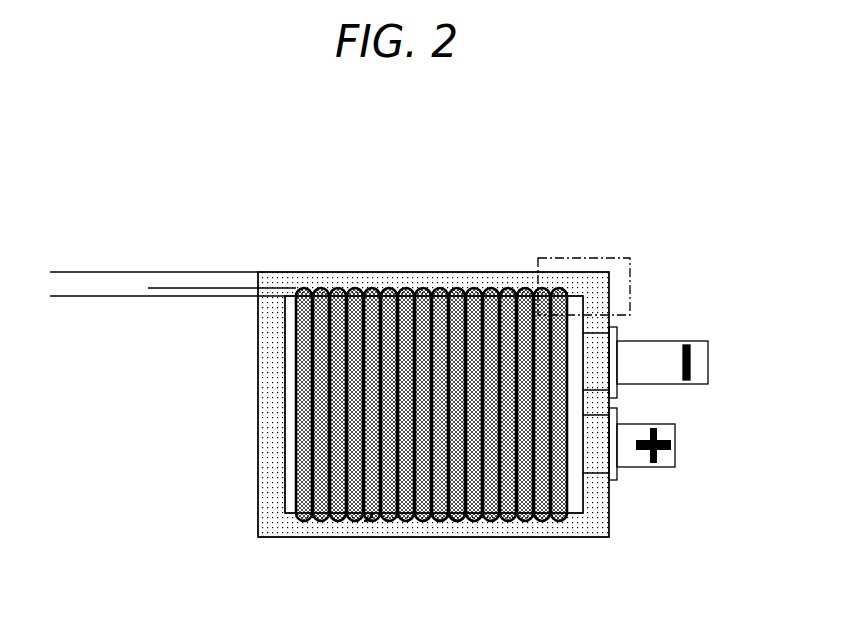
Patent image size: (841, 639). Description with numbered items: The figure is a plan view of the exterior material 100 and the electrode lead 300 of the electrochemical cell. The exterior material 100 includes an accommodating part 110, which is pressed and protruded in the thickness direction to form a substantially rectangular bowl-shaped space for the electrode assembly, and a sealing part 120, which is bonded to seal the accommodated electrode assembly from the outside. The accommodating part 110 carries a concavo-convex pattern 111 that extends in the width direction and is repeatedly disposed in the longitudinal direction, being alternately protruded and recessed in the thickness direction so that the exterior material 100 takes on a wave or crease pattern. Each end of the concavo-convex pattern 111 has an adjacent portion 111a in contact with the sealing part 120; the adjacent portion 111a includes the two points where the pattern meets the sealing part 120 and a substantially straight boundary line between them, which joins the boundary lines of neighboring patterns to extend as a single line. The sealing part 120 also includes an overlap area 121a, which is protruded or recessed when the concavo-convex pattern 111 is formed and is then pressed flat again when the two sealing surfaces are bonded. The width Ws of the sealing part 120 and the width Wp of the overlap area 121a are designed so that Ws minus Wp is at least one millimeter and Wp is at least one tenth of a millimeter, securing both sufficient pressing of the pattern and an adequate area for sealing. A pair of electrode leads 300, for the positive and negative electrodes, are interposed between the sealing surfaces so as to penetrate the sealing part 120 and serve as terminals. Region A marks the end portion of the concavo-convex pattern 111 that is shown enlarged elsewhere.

The exterior material 100 is at (460, 158).
The accommodating part 110 is at (293, 373).
The concavo-convex pattern 111 is at (548, 507).
The adjacent portion 111a is at (369, 521).
The sealing part 120 is at (272, 418).
The overlap area 121a is at (450, 520).
The electrode lead 300 is at (679, 326).
The enlarged region A is at (600, 257).
The width of the sealing part Ws is at (68, 318).
The width of the overlap area Wp is at (167, 320).